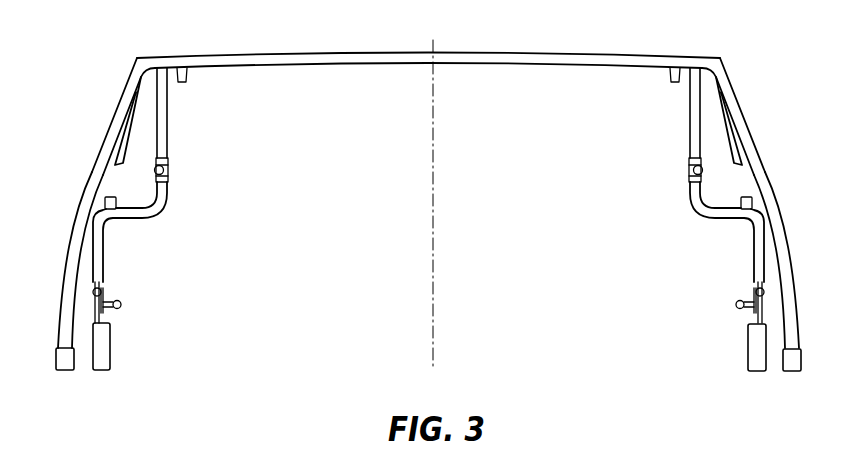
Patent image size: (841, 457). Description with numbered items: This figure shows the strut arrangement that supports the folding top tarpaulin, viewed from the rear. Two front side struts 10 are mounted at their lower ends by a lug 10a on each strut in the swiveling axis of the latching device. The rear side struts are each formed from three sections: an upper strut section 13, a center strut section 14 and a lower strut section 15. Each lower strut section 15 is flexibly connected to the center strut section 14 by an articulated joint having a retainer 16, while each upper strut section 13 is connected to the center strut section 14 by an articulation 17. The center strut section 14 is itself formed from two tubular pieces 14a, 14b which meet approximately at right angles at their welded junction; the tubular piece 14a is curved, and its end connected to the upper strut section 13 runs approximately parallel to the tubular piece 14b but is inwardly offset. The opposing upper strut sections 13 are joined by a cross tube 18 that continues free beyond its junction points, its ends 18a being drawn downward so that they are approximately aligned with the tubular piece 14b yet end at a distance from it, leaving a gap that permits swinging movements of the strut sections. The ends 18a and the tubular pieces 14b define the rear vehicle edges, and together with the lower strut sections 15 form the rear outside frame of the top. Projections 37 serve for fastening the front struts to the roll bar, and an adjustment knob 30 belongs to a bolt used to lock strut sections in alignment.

The front side strut 10 is at (78, 219).
The lug 10a is at (65, 372).
The upper strut section 13 is at (168, 115).
The center strut section 14 is at (107, 200).
The tubular piece 14a is at (158, 200).
The tubular piece 14b is at (103, 244).
The lower strut section 15 is at (105, 355).
The retainer 16 is at (101, 292).
The articulation 17 is at (170, 168).
The cross tube 18 is at (298, 56).
The end of cross tube 18a is at (134, 95).
The adjustment knob 30 is at (122, 304).
The projection 37 is at (188, 78).